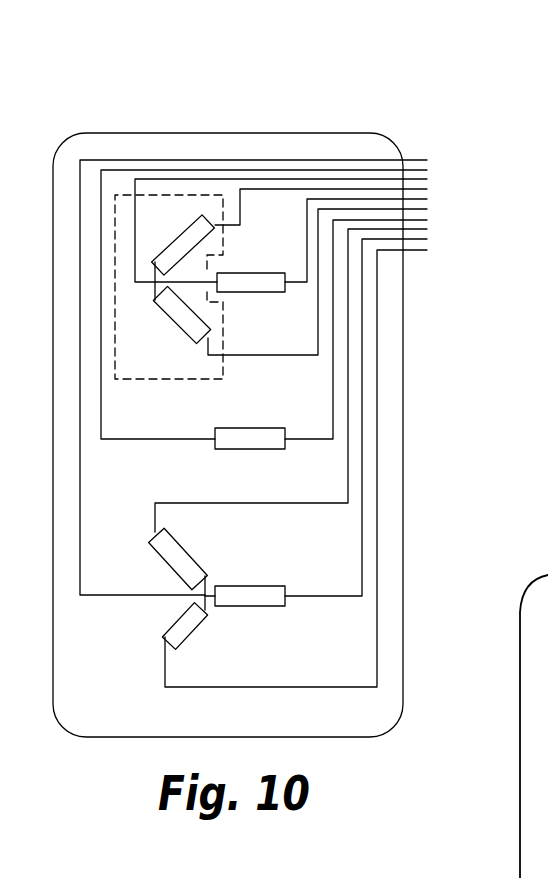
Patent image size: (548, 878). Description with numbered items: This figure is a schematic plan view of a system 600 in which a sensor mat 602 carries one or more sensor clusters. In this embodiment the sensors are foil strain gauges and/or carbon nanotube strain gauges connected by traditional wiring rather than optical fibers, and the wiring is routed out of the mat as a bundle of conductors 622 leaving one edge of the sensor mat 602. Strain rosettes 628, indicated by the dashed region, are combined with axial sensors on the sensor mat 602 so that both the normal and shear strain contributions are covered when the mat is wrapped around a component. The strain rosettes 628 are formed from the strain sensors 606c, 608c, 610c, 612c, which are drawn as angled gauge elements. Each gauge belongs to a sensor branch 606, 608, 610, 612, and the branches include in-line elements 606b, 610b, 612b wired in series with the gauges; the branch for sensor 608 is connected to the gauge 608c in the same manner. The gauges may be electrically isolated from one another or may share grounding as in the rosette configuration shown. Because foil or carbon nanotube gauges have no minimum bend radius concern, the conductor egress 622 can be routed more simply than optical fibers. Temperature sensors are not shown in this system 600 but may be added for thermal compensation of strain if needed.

The system 600 is at (253, 370).
The sensor mat 602 is at (292, 142).
The first sensor circuit 606 is at (311, 605).
The first resistor 606b is at (242, 597).
The strain sensor 606c is at (185, 625).
The second sensor circuit 608 is at (308, 222).
The strain sensor 608c is at (183, 237).
The third sensor circuit 610 is at (278, 437).
The third resistor 610b is at (212, 457).
The strain sensor 610c is at (167, 548).
The fourth sensor circuit 612 is at (278, 437).
The fourth resistor 612b is at (257, 440).
The strain sensor 612c is at (180, 313).
The conductor bundle 622 is at (415, 152).
The strain rosette 628 is at (124, 195).